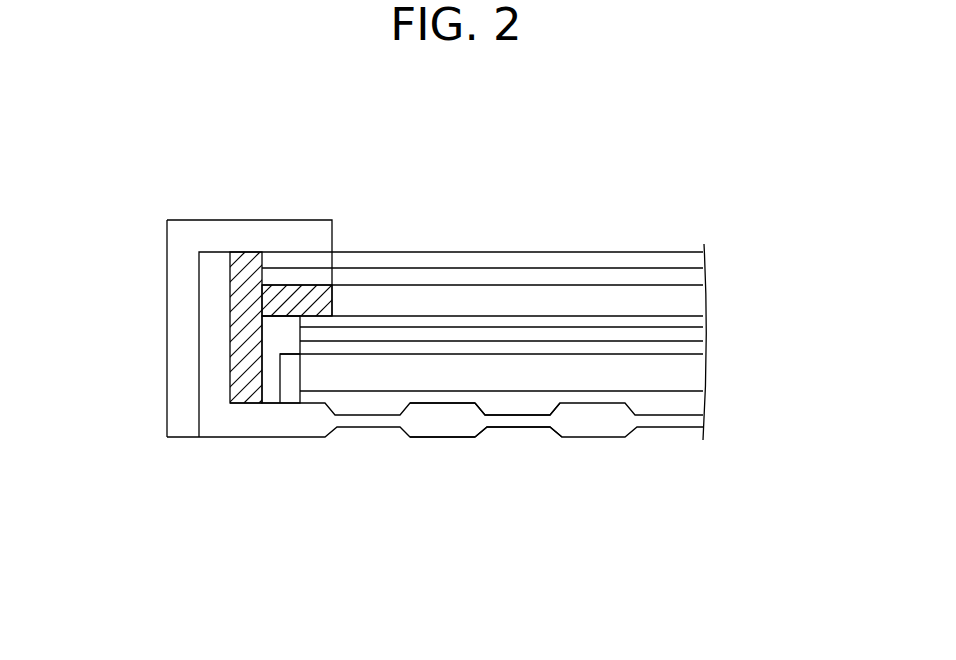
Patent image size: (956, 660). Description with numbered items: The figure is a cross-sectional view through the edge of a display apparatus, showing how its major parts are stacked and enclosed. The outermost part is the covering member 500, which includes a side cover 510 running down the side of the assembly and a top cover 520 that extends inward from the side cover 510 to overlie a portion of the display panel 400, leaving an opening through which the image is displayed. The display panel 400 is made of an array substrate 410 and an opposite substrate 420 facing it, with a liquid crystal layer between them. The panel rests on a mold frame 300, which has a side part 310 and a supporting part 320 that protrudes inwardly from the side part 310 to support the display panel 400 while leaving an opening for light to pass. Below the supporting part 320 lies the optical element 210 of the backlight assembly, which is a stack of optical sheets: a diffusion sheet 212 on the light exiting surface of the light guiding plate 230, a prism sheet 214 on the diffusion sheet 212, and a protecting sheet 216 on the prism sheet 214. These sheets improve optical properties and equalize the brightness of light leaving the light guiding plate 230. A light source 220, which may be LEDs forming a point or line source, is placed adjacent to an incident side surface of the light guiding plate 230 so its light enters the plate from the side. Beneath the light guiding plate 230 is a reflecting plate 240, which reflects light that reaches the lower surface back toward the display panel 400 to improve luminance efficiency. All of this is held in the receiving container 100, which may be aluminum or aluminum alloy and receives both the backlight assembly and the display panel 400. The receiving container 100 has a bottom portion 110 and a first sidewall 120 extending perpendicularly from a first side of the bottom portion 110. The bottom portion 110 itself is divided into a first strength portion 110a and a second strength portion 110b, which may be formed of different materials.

The receiving container 100 is at (435, 417).
The bottom portion 110 is at (435, 475).
The first strength portion 110a is at (444, 418).
The second strength portion 110b is at (518, 458).
The first sidewall 120 is at (218, 382).
The optical element 210 is at (553, 346).
The diffusion sheet 212 is at (693, 350).
The prism sheet 214 is at (700, 336).
The protecting sheet 216 is at (700, 322).
The light source 220 is at (289, 395).
The light guiding plate 230 is at (692, 373).
The reflecting plate 240 is at (692, 398).
The mold frame 300 is at (252, 327).
The side part 310 is at (238, 354).
The supporting part 320 is at (297, 297).
The display panel 400 is at (537, 277).
The array substrate 410 is at (700, 278).
The opposite substrate 420 is at (700, 262).
The covering member 500 is at (230, 275).
The side cover 510 is at (175, 265).
The top cover 520 is at (249, 234).